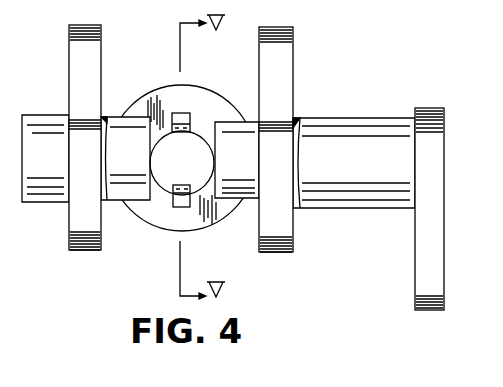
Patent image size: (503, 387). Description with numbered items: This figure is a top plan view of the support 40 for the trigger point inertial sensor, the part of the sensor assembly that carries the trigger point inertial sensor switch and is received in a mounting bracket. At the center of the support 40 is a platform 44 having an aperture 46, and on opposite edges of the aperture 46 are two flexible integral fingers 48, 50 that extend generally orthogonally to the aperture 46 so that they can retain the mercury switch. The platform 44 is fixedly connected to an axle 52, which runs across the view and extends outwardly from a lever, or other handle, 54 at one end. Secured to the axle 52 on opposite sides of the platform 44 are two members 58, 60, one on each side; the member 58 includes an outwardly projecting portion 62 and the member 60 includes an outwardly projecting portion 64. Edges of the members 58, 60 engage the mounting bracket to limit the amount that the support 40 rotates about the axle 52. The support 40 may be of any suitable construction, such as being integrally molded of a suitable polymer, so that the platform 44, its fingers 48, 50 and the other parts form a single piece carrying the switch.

The support 40 is at (254, 159).
The platform 44 is at (146, 104).
The aperture 46 is at (197, 140).
The flexible integral finger 48 is at (178, 112).
The flexible integral finger 50 is at (190, 205).
The axle 52 is at (58, 208).
The lever 54 is at (438, 114).
The member 58 is at (86, 27).
The member 60 is at (280, 28).
The outwardly projecting portion 62 is at (78, 243).
The outwardly projecting portion 64 is at (288, 226).